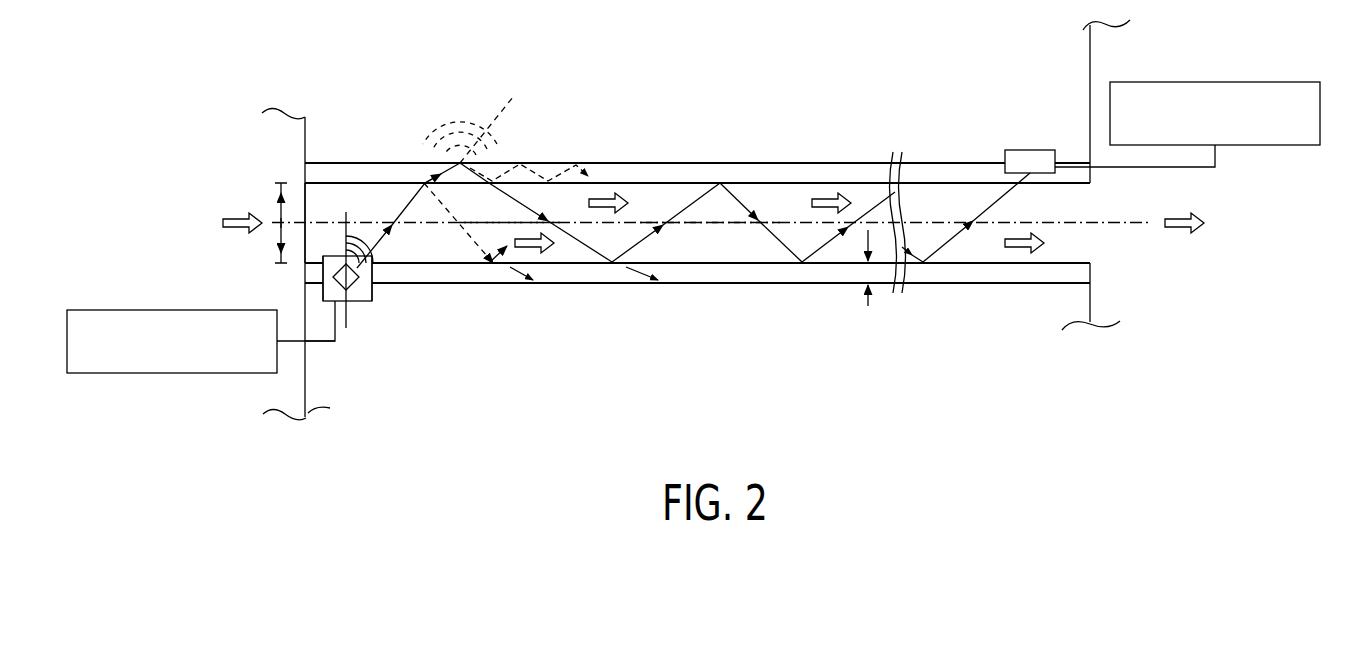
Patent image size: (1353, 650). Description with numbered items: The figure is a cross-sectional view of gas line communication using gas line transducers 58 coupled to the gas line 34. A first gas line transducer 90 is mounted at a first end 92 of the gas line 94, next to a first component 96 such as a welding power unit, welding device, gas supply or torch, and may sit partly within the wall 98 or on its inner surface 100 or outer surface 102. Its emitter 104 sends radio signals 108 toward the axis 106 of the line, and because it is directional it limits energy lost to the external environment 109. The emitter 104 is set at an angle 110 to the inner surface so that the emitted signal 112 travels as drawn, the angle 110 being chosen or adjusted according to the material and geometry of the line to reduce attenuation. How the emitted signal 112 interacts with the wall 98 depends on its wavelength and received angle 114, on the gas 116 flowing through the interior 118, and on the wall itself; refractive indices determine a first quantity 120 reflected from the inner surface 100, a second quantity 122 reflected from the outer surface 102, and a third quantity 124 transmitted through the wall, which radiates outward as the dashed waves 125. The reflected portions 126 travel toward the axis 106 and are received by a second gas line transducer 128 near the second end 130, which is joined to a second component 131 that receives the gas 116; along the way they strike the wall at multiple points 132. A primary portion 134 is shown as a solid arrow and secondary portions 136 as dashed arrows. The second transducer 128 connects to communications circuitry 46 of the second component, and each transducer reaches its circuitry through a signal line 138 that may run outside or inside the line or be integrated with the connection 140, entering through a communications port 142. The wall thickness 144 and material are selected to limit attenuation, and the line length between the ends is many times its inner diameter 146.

The gas line 34 is at (697, 323).
The communications circuitry 46 is at (177, 310).
The gas line transducers 58 is at (375, 289).
The first gas line transducer 90 is at (373, 302).
The first end 92 is at (697, 199).
The gas line 94 is at (679, 290).
The first component 96 is at (324, 409).
The wall 98 is at (495, 278).
The inner surface 100 is at (742, 258).
The outer surface 102 is at (727, 285).
The emitter 104 is at (323, 268).
The axis 106 is at (1136, 226).
The radio signals 108 is at (350, 255).
The external environment 109 is at (517, 427).
The angle 110 is at (406, 250).
The emitted signal 112 is at (426, 205).
The received angle 114 is at (398, 188).
The gas 116 is at (272, 212).
The interior 118 is at (335, 190).
The first quantity 120 is at (443, 202).
The second quantity 122 is at (480, 161).
The third quantity 124 is at (505, 112).
The dashed waves 125 is at (438, 122).
The portions 126 is at (612, 270).
The second gas line transducer 128 is at (1003, 158).
The second end 130 is at (1080, 140).
The second component 131 is at (1084, 317).
The points 132 is at (586, 157).
The primary portion 134 is at (698, 203).
The secondary portions 136 is at (553, 172).
The signal line 138 is at (314, 350).
The connection 140 is at (302, 276).
The communications port 142 is at (322, 360).
The thickness 144 is at (868, 306).
The inner diameter 146 is at (279, 190).